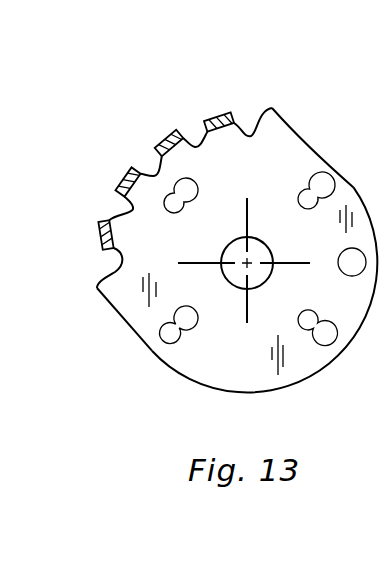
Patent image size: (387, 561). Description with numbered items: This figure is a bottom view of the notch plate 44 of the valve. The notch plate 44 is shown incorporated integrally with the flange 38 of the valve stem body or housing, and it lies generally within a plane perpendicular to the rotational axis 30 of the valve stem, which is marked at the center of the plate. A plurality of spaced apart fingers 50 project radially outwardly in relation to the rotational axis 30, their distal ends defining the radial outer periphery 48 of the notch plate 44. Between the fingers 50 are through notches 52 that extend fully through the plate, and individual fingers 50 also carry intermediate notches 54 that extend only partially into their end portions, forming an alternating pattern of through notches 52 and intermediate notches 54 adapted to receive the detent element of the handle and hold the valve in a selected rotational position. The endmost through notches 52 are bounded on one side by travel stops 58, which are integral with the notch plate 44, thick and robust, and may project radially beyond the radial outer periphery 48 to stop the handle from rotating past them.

The rotational axis 30 is at (250, 260).
The flange 38 is at (243, 250).
The notch plate 44 is at (151, 347).
The radial outer periphery 48 is at (170, 130).
The fingers 50 is at (125, 176).
The through notches 52 is at (103, 261).
The intermediate notches 54 is at (220, 113).
The travel stops 58 is at (288, 119).